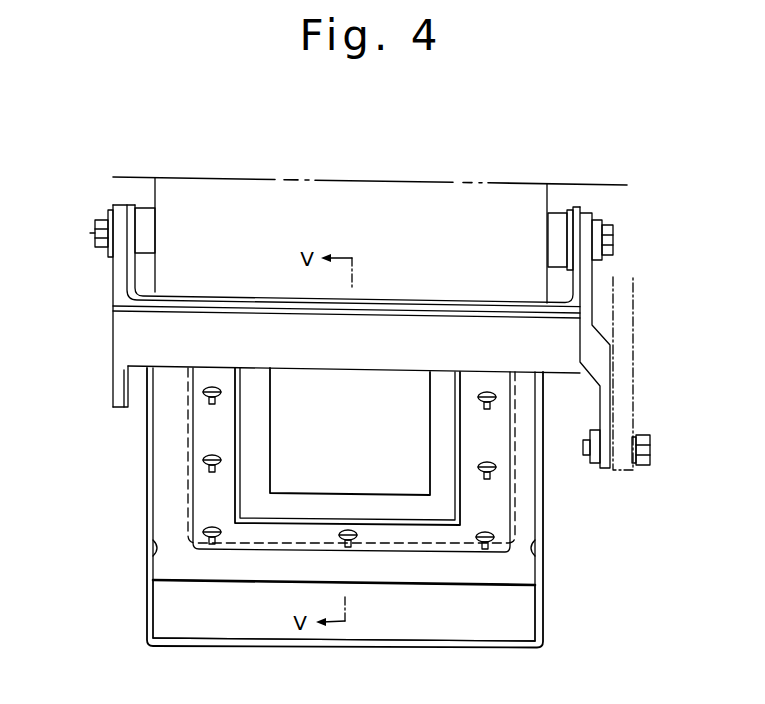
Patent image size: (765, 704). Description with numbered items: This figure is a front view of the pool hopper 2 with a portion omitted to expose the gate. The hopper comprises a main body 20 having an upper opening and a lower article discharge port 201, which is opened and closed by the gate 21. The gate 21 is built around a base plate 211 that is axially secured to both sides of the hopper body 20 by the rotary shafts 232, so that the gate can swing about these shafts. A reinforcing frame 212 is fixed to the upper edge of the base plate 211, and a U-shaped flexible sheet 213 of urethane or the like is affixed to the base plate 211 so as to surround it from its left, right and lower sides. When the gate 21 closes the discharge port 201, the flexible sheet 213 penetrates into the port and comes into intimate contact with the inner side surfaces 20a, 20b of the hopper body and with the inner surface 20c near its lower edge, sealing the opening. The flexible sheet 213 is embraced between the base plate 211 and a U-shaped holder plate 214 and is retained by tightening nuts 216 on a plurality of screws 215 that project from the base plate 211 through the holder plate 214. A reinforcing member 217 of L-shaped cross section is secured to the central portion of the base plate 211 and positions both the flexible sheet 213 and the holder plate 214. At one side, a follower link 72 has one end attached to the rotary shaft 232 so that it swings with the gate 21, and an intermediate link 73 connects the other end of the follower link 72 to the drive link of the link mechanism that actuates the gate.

The pool hopper 2 is at (539, 170).
The main body 20 is at (417, 193).
The inner side surface 20a is at (150, 548).
The inner side surface 20b is at (547, 558).
The inner surface 20c is at (388, 592).
The gate 21 is at (261, 592).
The article discharge port 201 is at (439, 610).
The base plate 211 is at (400, 385).
The reinforcing frame 212 is at (228, 323).
The flexible sheet 213 is at (218, 568).
The holder plate 214 is at (195, 490).
The screw 215 is at (222, 398).
The nut 216 is at (226, 390).
The reinforcing member 217 is at (255, 450).
The rotary shaft 232 is at (95, 228).
The follower link 72 is at (598, 373).
The intermediate link 73 is at (630, 343).